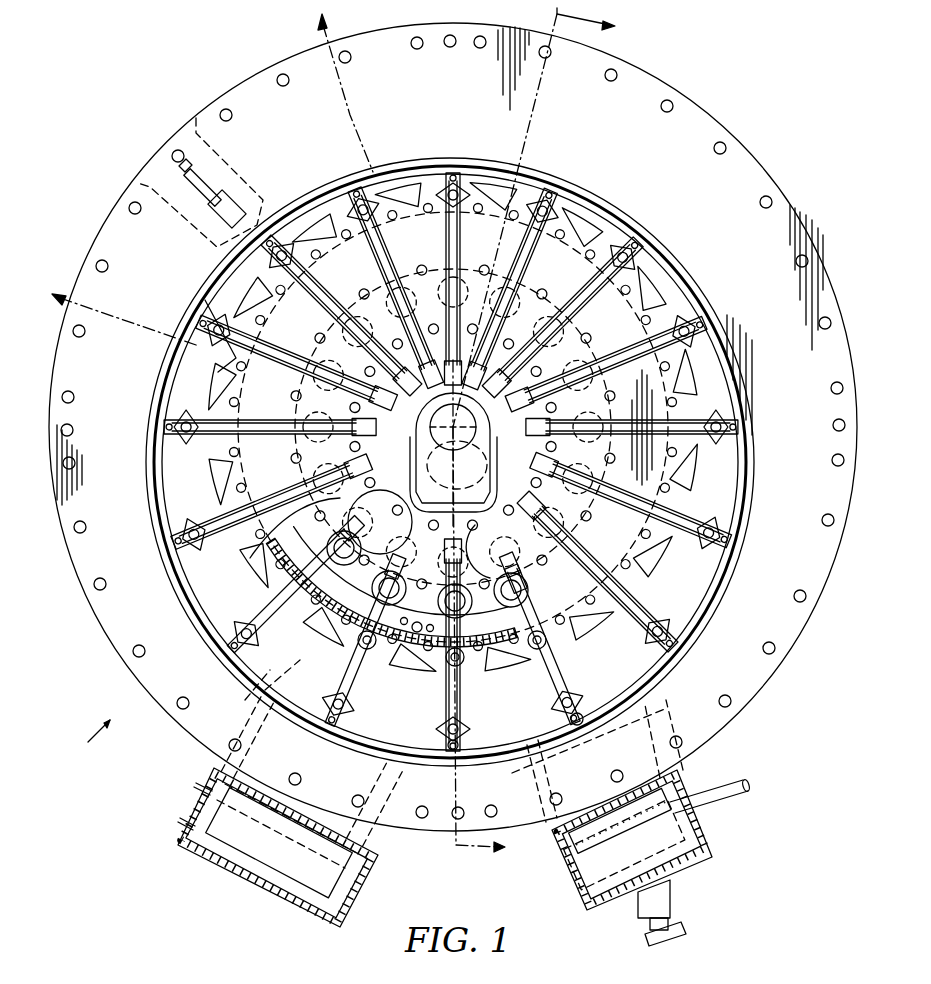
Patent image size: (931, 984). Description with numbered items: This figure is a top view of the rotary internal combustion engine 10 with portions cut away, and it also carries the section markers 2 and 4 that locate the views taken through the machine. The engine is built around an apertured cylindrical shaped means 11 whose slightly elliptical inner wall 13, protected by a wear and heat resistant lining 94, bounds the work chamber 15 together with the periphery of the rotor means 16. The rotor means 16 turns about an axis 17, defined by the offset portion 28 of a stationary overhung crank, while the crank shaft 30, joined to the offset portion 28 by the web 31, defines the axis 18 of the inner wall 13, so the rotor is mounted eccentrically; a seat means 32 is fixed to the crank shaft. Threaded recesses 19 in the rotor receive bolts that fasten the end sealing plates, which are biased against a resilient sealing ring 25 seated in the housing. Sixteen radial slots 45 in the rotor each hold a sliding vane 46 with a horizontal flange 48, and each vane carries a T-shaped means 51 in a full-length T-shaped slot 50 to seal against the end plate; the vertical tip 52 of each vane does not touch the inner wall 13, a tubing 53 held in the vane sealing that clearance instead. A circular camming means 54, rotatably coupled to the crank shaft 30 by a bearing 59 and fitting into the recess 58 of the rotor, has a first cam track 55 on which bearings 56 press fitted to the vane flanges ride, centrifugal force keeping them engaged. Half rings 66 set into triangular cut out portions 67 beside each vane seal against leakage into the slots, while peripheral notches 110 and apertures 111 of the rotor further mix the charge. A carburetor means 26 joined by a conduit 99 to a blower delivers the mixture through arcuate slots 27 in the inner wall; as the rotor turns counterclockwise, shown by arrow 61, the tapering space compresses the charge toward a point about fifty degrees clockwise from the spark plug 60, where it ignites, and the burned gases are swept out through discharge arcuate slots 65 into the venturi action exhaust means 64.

The rotary internal combustion engine 10 is at (85, 738).
The cylindrical shaped means 11 is at (88, 574).
The inner wall 13 is at (725, 585).
The work chamber 15 is at (683, 612).
The rotor means 16 is at (208, 494).
The axis 17 is at (456, 430).
The axis 18 is at (475, 466).
The threaded recesses 19 is at (292, 397).
The resilient sealing ring 25 is at (752, 492).
The carburetor means 26 is at (690, 872).
The arcuate slots 27 is at (540, 755).
The offset portion 28 is at (454, 445).
The crank shaft 30 is at (490, 462).
The web 31 is at (418, 433).
The seat means 32 is at (388, 530).
The radial slots 45 is at (398, 290).
The vane 46 is at (455, 222).
The horizontal flange 48 is at (450, 563).
The T-shaped slot 50 is at (568, 690).
The T-shaped means 51 is at (553, 656).
The vertical tip 52 is at (577, 717).
The tubing 53 is at (452, 752).
The camming means 54 is at (498, 606).
The first cam track 55 is at (352, 558).
The bearings 56 is at (402, 590).
The recess 58 is at (310, 323).
The bearing 59 is at (420, 475).
The spark plug 60 is at (180, 171).
The arrow 61 is at (543, 266).
The venturi action exhaust means 64 is at (378, 857).
The discharge arcuate slots 65 is at (303, 718).
The half ring 66 is at (296, 590).
The triangular shaped cut out portion 67 is at (303, 622).
The lining 94 is at (266, 690).
The conduit 99 is at (180, 848).
The peripheral notches 110 is at (240, 390).
The apertures 111 is at (211, 341).
The section line 2- 2 is at (205, 177).
The section line 4- 4 is at (542, 437).